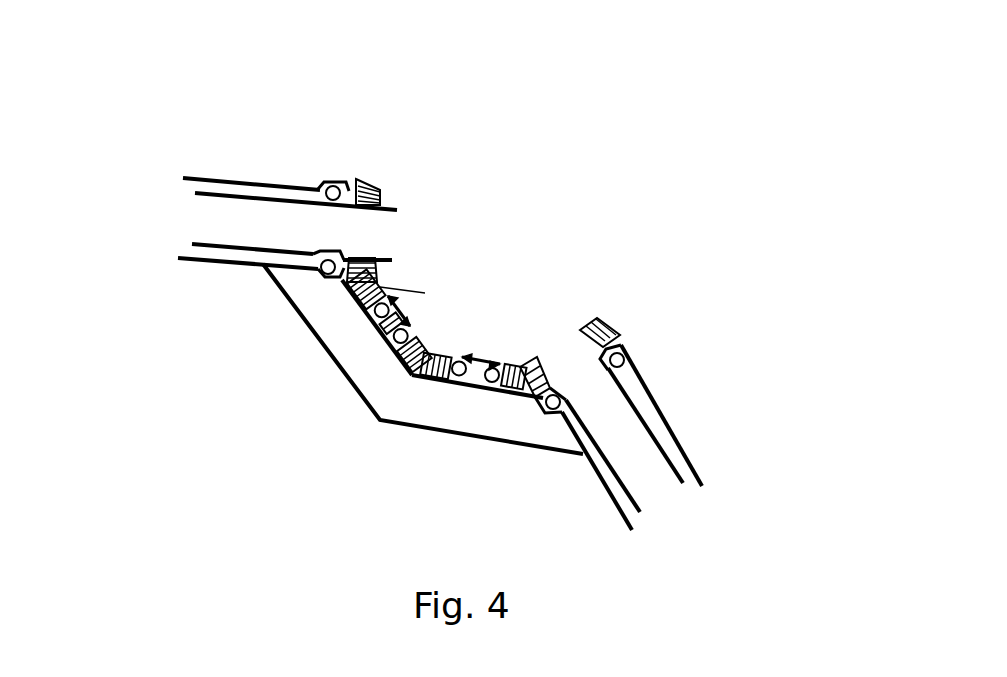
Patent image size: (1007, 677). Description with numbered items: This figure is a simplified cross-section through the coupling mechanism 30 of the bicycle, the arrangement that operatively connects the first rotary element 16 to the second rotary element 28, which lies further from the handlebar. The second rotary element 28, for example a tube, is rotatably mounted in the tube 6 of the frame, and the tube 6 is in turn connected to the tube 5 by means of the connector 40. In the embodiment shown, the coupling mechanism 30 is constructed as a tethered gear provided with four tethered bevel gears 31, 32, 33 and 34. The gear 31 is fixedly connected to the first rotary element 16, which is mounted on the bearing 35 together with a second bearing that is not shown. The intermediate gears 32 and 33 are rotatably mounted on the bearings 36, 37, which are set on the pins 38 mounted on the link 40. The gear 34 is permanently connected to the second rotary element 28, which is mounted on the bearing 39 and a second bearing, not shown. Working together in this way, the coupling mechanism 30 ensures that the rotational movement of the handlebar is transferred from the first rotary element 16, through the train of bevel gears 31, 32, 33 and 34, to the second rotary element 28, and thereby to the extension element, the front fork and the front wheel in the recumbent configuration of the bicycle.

The tube 5 is at (187, 257).
The tube 6 is at (633, 522).
The first rotary element 16 is at (253, 248).
The second rotary element 28 is at (630, 493).
The coupling mechanism 30 is at (616, 188).
The bevel gear 31 is at (383, 44).
The bevel gear 32 is at (420, 345).
The bevel gear 33 is at (515, 360).
The bevel gear 34 is at (580, 325).
The bearing 35 is at (313, 250).
The bearing 36 is at (388, 340).
The bearing 37 is at (457, 376).
The pins 38 is at (487, 381).
The bearing 39 is at (556, 404).
The connector / link 40 is at (527, 447).